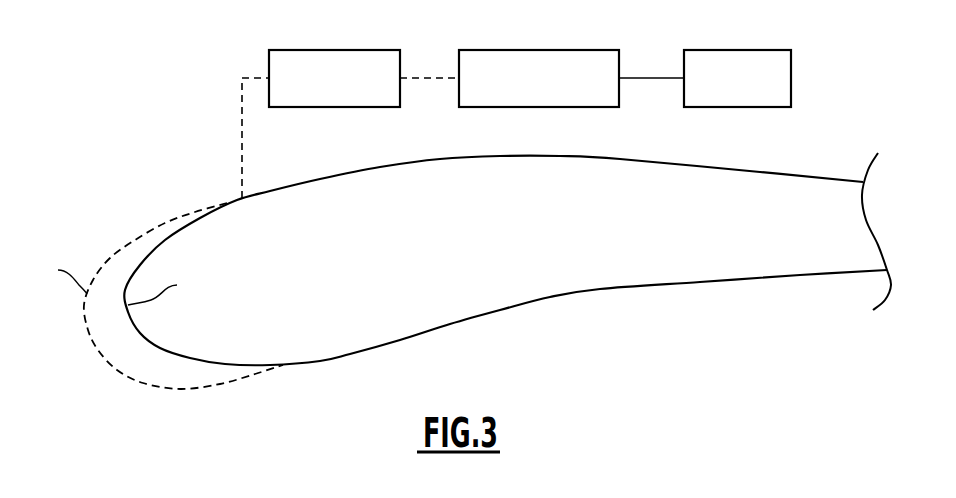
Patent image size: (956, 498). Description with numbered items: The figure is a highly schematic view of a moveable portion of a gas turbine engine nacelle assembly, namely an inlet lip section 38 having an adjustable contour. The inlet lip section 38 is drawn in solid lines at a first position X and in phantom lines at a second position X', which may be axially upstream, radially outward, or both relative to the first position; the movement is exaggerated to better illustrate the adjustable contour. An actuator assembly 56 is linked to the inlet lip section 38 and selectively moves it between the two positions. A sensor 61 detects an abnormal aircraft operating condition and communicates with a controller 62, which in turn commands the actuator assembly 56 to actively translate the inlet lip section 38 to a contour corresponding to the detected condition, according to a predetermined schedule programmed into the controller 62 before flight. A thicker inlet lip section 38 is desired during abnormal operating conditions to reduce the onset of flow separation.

The inlet lip section 38 is at (213, 193).
The actuator assembly 56 is at (334, 50).
The controller 62 is at (553, 50).
The sensor 61 is at (753, 50).